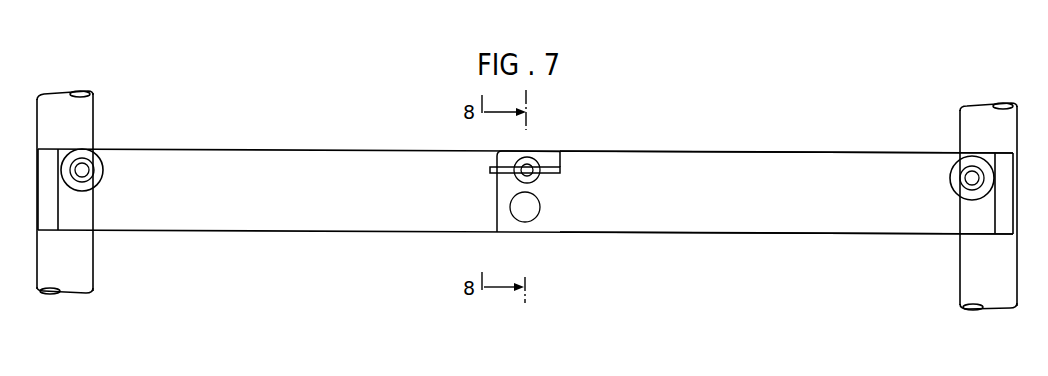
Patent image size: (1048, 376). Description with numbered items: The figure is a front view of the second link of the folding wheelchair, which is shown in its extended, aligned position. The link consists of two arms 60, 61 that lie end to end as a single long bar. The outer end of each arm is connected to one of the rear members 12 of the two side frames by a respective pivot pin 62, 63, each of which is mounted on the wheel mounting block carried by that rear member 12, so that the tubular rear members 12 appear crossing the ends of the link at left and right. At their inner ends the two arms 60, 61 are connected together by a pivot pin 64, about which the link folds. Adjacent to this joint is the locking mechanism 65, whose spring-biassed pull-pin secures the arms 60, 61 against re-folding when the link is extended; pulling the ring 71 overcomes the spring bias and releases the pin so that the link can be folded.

The rear member 12 is at (85, 134).
The arm 60 is at (260, 160).
The arm 61 is at (723, 160).
The pivot pin 62 is at (102, 167).
The pivot pin 63 is at (950, 176).
The pivot pin 64 is at (531, 209).
The locking mechanism 65 is at (558, 188).
The ring 71 is at (550, 167).